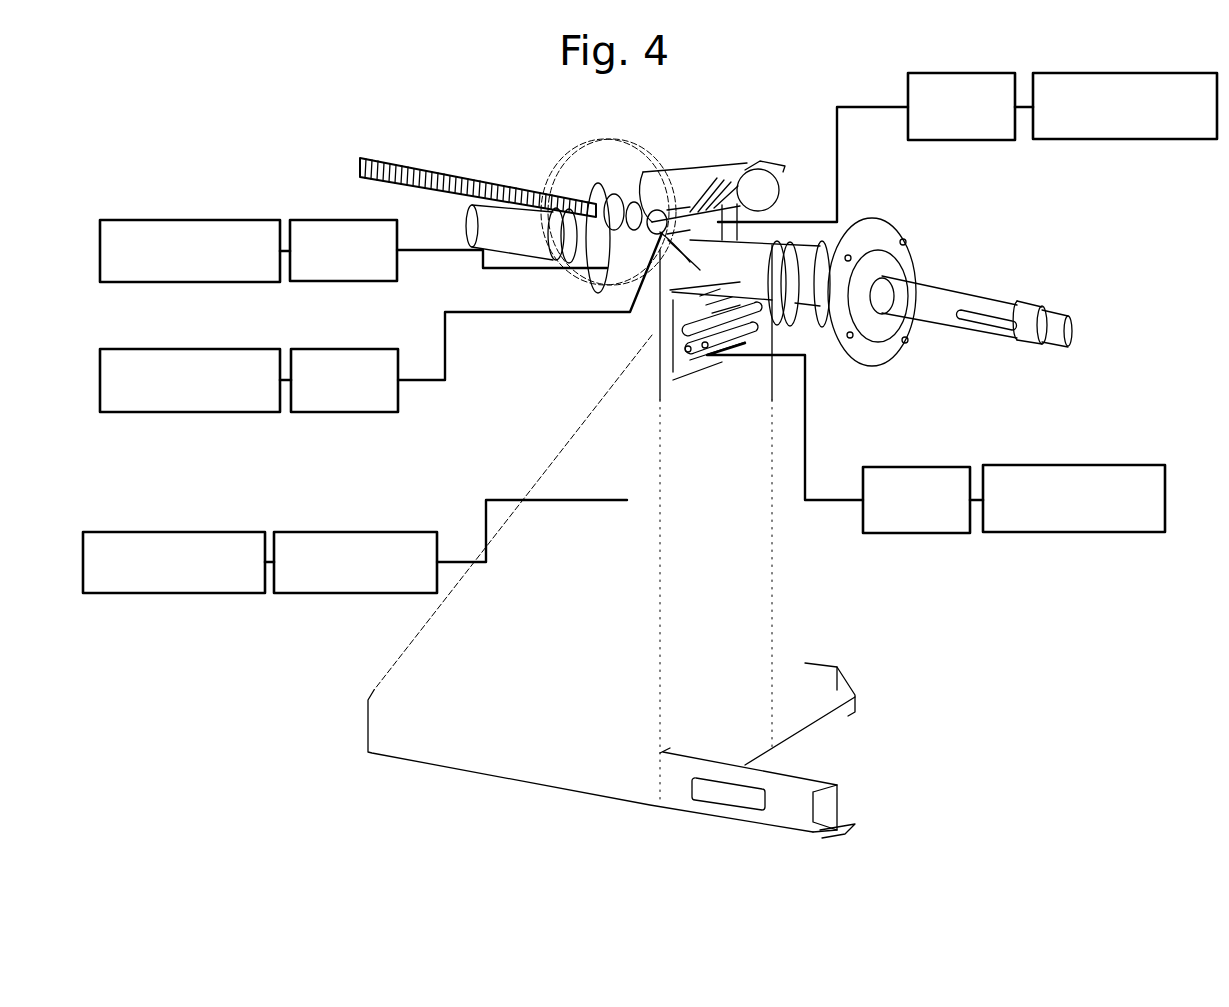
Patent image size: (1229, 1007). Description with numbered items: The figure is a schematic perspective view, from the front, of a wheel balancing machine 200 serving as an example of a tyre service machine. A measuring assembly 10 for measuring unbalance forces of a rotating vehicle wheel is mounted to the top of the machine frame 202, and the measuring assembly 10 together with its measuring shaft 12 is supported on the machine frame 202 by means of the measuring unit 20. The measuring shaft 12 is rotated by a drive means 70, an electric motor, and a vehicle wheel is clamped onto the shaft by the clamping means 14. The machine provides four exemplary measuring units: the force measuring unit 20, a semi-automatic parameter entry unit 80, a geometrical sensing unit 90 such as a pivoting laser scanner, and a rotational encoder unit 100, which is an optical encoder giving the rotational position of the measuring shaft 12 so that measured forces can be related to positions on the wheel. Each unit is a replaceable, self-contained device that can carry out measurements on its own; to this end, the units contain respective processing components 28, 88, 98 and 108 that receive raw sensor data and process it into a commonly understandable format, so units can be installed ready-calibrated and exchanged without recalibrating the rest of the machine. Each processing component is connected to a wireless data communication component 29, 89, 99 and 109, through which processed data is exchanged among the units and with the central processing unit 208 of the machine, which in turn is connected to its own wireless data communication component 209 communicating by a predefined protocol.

The measuring assembly 10 is at (906, 281).
The measuring shaft 12 is at (1017, 308).
The clamping means 14 is at (898, 253).
The measuring unit 20 is at (703, 245).
The processing component 28 is at (982, 72).
The data communication component 29 is at (1062, 72).
The drive means 70 is at (570, 157).
The semi-automatic parameter entry (SAPE) unit 80 is at (677, 165).
The processing component 88 is at (324, 348).
The data communication component 89 is at (142, 349).
The geometrical sensing unit 90 is at (648, 347).
The processing component 98 is at (930, 465).
The data communication component 99 is at (1012, 465).
The rotational encoder unit 100 is at (593, 242).
The processing component 108 is at (325, 216).
The data communication component 109 is at (243, 217).
The wheel balancing machine 200 is at (661, 586).
The machine frame 202 is at (447, 688).
The central processing unit 208 is at (310, 530).
The data communication component 209 is at (227, 530).